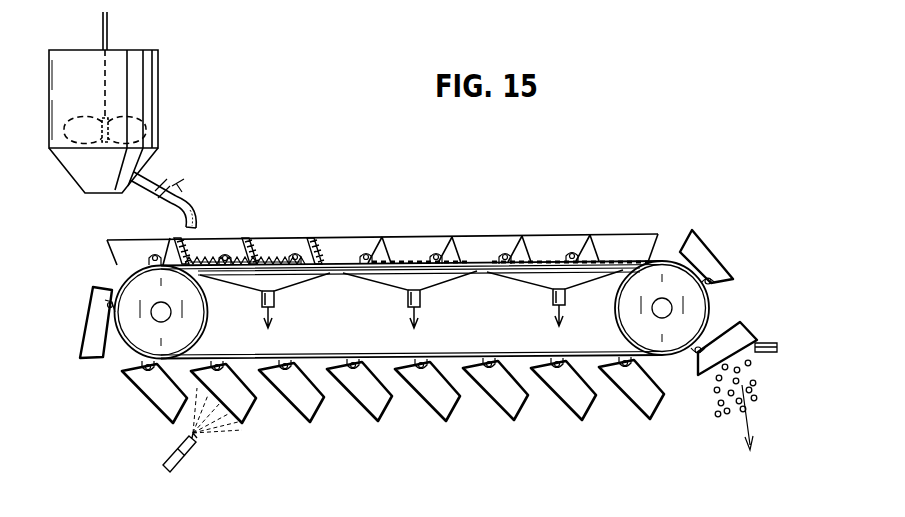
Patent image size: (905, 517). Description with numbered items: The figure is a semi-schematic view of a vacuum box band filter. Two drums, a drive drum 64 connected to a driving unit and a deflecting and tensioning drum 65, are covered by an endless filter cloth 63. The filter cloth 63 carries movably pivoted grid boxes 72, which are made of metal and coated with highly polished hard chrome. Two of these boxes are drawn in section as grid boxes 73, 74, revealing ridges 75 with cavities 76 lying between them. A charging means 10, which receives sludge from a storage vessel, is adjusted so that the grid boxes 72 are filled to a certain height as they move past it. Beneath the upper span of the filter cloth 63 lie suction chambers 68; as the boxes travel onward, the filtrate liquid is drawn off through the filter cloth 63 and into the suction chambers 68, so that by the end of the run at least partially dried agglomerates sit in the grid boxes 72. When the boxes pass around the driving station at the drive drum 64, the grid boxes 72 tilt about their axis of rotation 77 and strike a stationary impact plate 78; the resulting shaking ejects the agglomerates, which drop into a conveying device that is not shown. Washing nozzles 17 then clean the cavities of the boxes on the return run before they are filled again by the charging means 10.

The charging means 10 is at (186, 200).
The washing nozzles 17 is at (191, 470).
The filter cloth 63 is at (688, 268).
The drive drum 64 is at (695, 308).
The deflecting and tensioning drum 65 is at (132, 333).
The suction chambers 68 is at (353, 279).
The grid boxes 72 is at (402, 245).
The grid box shown in section 73 is at (186, 233).
The grid box shown in section 74 is at (288, 240).
The ridges 75 is at (281, 270).
The cavities 76 is at (250, 240).
The axis of rotation 77 is at (717, 280).
The stationary impact plate 78 is at (769, 353).